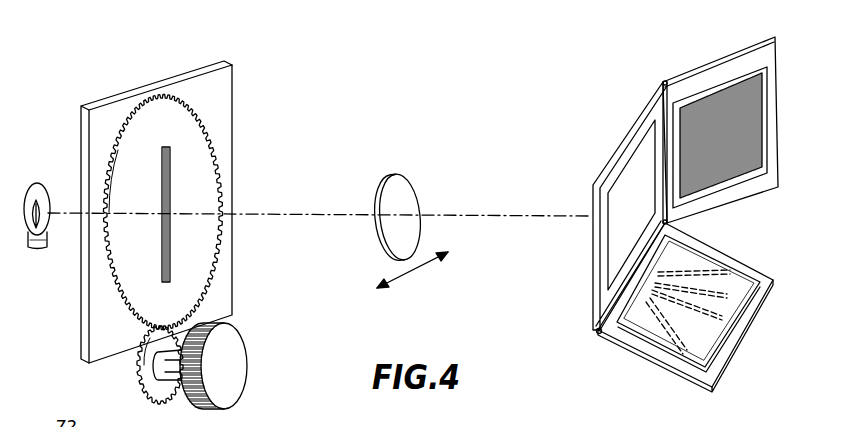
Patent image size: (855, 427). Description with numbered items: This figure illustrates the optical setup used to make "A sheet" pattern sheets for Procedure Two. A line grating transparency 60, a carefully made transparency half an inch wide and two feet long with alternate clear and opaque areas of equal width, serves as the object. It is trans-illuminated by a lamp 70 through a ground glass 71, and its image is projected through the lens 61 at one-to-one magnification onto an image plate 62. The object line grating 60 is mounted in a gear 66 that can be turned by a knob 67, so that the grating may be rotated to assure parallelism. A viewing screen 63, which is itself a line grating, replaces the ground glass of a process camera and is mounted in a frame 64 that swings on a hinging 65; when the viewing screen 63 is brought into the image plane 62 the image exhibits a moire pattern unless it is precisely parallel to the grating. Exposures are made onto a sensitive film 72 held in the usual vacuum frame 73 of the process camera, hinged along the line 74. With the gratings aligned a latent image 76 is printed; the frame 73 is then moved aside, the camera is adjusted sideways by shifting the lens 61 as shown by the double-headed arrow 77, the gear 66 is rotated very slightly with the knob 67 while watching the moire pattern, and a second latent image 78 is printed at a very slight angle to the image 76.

The line grating transparency 60 is at (172, 175).
The lens 61 is at (412, 183).
The image plate 62 is at (638, 173).
The viewing screen 63 is at (723, 87).
The frame 64 is at (767, 53).
The hinging 65 is at (677, 65).
The gear 66 is at (212, 225).
The knob 67 is at (233, 356).
The lamp 70 is at (40, 182).
The ground glass 71 is at (137, 88).
The sensitive film 72 is at (693, 262).
The vacuum frame 73 is at (750, 272).
The hinge line 74 is at (608, 327).
The latent image 76 is at (727, 332).
The double-headed arrow 77 is at (412, 268).
The latent image 78 is at (727, 295).